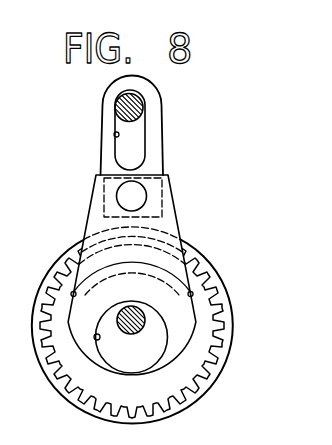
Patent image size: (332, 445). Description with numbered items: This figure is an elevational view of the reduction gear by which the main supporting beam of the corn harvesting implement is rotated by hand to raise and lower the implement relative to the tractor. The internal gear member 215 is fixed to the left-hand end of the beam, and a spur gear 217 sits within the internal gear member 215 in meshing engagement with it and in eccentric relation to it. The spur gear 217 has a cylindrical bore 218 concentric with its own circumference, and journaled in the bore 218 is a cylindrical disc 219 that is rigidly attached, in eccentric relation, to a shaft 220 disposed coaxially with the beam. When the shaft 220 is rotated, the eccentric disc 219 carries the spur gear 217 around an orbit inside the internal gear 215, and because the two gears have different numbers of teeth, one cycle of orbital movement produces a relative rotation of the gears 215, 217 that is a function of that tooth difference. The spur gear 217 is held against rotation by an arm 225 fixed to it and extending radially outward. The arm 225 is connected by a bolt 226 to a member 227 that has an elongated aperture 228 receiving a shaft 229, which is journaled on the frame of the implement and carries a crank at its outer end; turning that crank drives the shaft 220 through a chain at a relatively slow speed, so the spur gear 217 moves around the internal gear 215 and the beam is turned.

The internal gear member 215 is at (223, 303).
The spur gear 217 is at (207, 340).
The cylindrical bore 218 is at (97, 333).
The cylindrical disc 219 is at (128, 362).
The shaft 220 is at (130, 316).
The arm 225 is at (168, 223).
The bolt 226 is at (134, 195).
The member 227 is at (154, 130).
The elongated aperture 228 is at (115, 131).
The shaft 229 is at (142, 101).